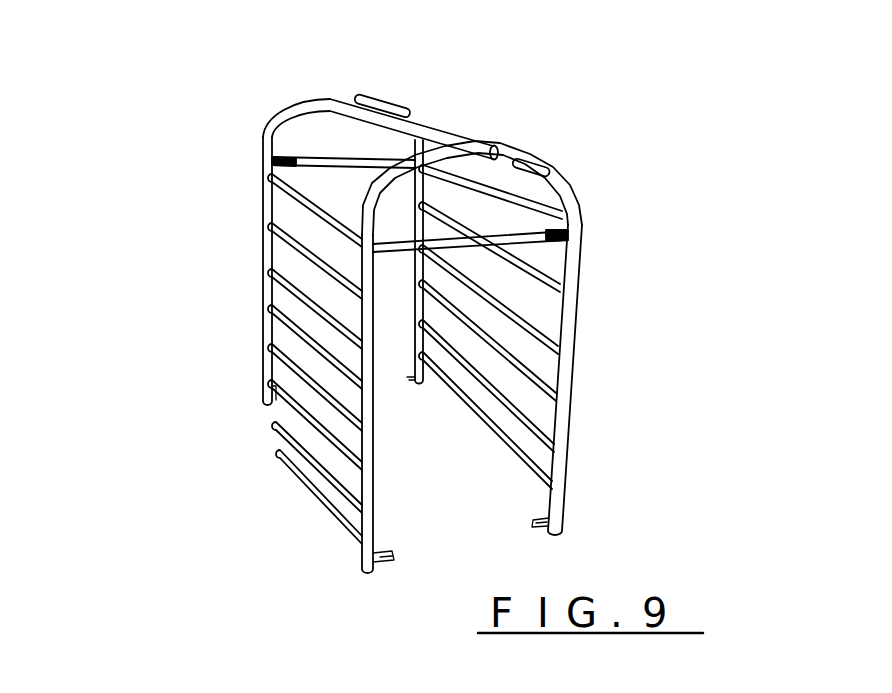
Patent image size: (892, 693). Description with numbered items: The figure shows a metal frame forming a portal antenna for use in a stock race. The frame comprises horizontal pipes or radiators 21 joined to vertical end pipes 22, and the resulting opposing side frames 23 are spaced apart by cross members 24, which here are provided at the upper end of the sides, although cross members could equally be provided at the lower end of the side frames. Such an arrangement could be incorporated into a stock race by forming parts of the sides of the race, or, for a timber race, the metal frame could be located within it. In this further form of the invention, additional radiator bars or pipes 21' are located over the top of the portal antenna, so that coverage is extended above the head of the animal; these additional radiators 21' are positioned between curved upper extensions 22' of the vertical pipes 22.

The horizontal pipes or radiators 21 is at (404, 354).
The additional radiator bars or pipes 21' is at (576, 104).
The vertical end pipes 22 is at (434, 299).
The curved upper extensions 22' is at (417, 140).
The opposing side frames 23 is at (238, 263).
The cross members 24 is at (270, 141).